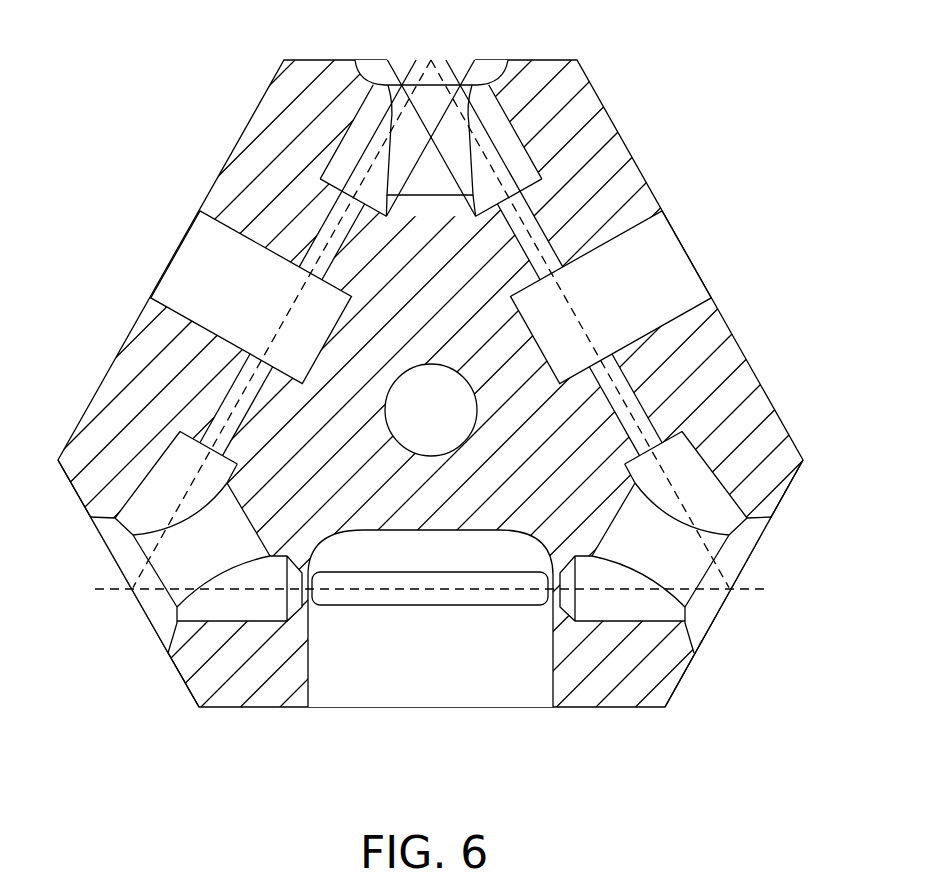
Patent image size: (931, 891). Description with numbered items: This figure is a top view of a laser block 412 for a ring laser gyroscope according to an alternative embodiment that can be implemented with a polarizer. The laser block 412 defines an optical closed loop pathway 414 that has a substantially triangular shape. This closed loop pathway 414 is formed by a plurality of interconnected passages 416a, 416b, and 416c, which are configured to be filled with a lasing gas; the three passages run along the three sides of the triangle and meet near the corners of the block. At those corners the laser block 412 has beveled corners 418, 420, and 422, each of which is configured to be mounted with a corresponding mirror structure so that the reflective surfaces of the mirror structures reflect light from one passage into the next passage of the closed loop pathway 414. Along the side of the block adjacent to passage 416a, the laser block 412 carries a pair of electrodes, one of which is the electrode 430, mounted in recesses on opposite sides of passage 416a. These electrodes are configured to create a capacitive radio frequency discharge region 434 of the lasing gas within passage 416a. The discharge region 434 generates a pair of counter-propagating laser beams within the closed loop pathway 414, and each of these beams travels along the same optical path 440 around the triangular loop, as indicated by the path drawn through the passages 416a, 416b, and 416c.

The laser block 412 is at (170, 147).
The optical closed loop pathway 414 is at (700, 482).
The passage 416a is at (557, 605).
The passage 416b is at (628, 170).
The passage 416c is at (228, 400).
The beveled corner 418 is at (172, 665).
The beveled corner 420 is at (793, 483).
The beveled corner 422 is at (327, 60).
The electrode 430 is at (448, 688).
The discharge region 434 is at (368, 603).
The optical path 440 is at (267, 343).